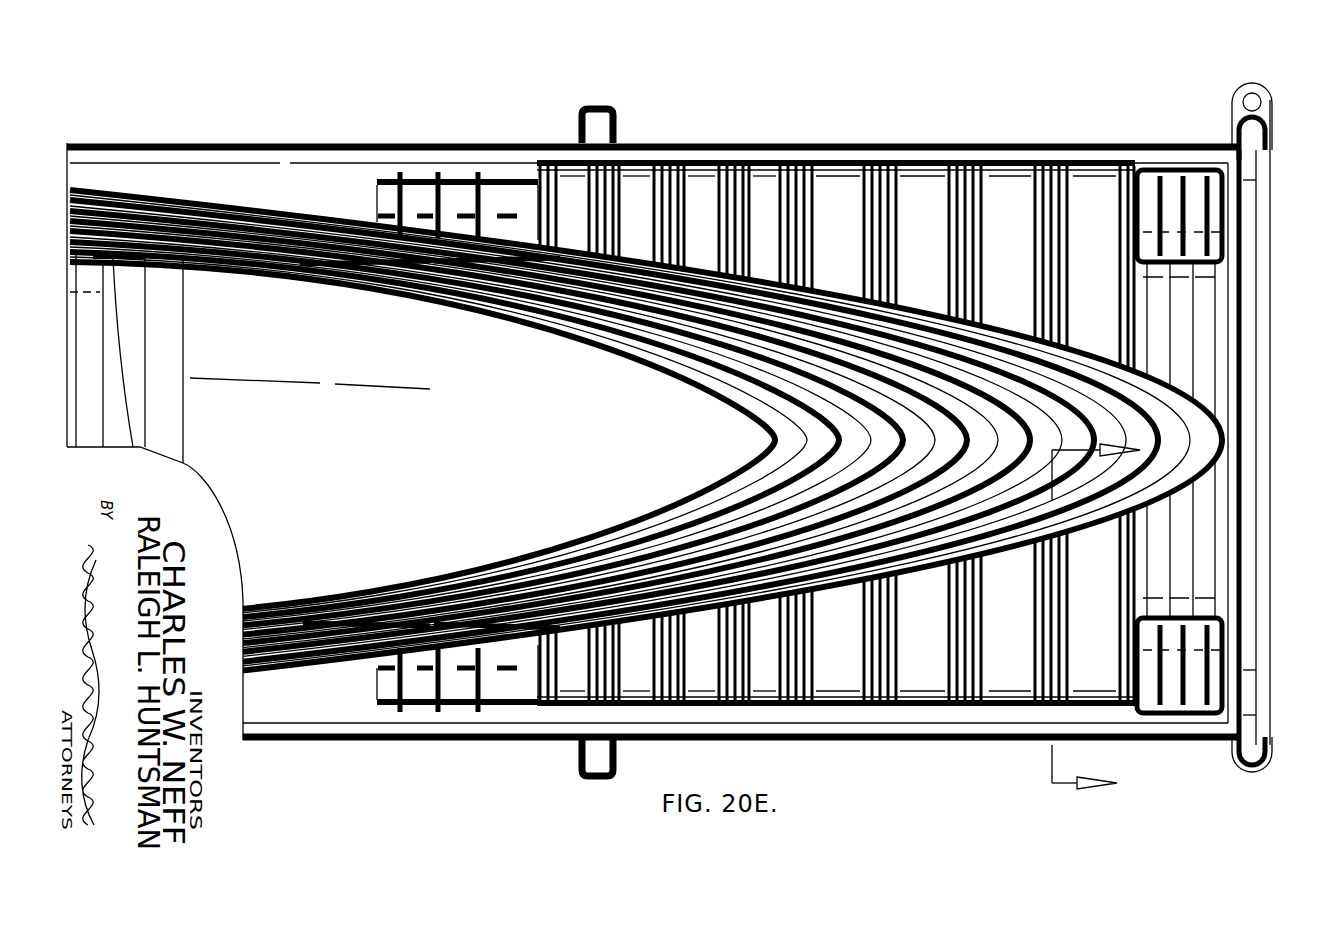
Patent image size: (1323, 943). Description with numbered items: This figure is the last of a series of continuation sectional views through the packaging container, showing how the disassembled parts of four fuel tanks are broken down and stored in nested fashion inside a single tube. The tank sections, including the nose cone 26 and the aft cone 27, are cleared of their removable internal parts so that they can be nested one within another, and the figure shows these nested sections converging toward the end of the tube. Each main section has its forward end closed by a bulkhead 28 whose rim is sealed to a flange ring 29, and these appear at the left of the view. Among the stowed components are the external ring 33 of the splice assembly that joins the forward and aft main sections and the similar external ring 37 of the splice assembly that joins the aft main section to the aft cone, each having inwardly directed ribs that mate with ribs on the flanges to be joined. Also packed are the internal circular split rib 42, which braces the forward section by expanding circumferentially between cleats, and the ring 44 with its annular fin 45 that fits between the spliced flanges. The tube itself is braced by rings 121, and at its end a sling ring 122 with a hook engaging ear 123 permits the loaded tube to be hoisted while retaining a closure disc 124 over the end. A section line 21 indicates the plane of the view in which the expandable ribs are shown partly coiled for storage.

The section line 21- 21 is at (1103, 608).
The nose cone 26 is at (378, 288).
The aft cone 27 is at (497, 317).
The bulkhead 28 is at (129, 372).
The flange ring 29 is at (138, 290).
The external ring 33 is at (1055, 705).
The external ring 37 is at (748, 705).
The internal circular split rib 42 is at (1212, 172).
The ring 44 is at (410, 178).
The annular fin 45 is at (400, 712).
The rings 121 is at (597, 107).
The sling rings 122 is at (1256, 766).
The hook engaging ears 123 is at (1243, 86).
The closure discs 124 is at (1247, 407).